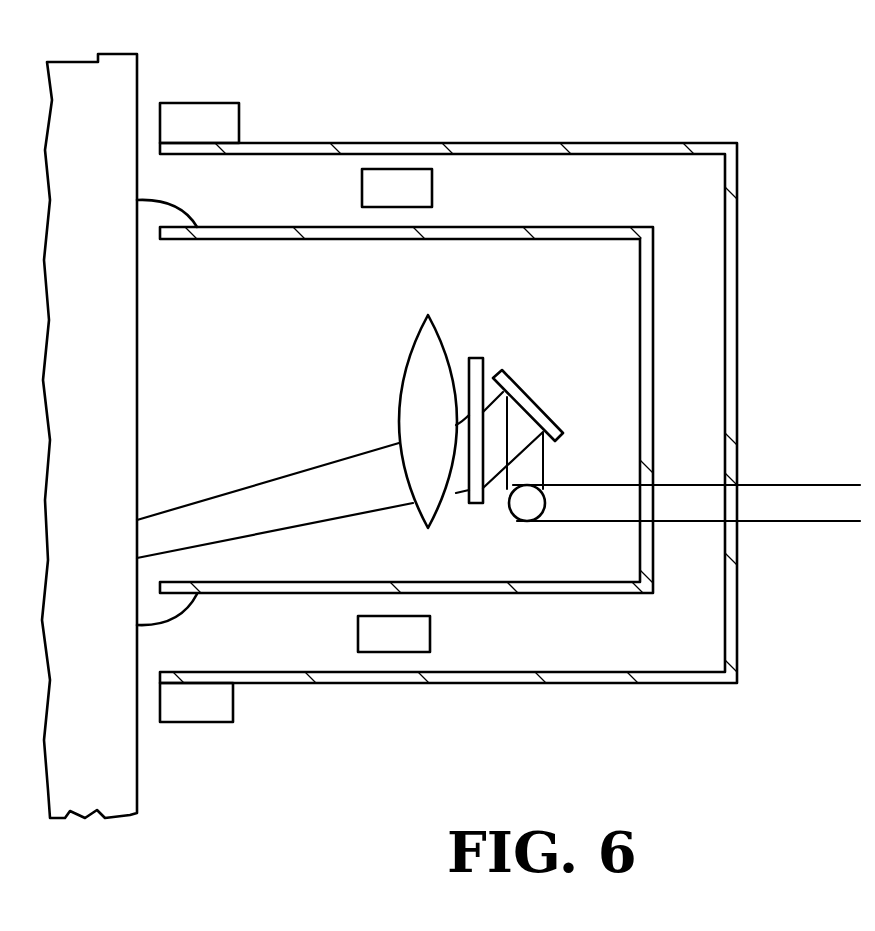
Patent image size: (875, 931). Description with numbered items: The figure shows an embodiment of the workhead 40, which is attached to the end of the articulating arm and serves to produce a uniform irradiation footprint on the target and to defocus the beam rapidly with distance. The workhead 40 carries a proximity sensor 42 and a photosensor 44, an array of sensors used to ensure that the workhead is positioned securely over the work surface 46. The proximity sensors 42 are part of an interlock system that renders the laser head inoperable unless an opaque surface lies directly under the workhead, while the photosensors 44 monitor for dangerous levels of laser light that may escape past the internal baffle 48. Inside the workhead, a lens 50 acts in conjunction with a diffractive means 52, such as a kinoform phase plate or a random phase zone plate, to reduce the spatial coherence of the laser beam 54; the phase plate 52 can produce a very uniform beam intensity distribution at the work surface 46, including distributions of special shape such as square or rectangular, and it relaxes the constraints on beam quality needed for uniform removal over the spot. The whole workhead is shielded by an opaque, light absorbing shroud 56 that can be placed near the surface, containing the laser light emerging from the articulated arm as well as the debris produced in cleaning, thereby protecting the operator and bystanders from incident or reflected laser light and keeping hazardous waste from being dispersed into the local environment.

The workhead 40 is at (643, 98).
The proximity sensor 42 is at (240, 113).
The photosensor 44 is at (432, 193).
The work surface 46 is at (137, 83).
The internal baffle 48 is at (177, 208).
The lens 50 is at (415, 343).
The diffractive means 52 is at (483, 358).
The laser beam 54 is at (277, 478).
The shroud 56 is at (737, 225).